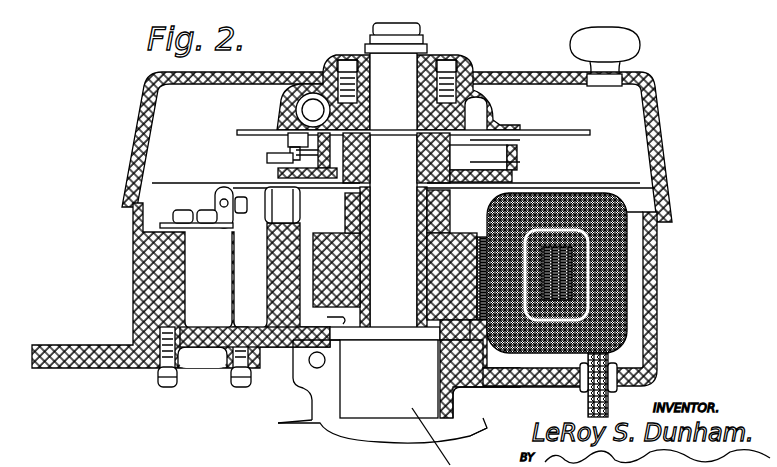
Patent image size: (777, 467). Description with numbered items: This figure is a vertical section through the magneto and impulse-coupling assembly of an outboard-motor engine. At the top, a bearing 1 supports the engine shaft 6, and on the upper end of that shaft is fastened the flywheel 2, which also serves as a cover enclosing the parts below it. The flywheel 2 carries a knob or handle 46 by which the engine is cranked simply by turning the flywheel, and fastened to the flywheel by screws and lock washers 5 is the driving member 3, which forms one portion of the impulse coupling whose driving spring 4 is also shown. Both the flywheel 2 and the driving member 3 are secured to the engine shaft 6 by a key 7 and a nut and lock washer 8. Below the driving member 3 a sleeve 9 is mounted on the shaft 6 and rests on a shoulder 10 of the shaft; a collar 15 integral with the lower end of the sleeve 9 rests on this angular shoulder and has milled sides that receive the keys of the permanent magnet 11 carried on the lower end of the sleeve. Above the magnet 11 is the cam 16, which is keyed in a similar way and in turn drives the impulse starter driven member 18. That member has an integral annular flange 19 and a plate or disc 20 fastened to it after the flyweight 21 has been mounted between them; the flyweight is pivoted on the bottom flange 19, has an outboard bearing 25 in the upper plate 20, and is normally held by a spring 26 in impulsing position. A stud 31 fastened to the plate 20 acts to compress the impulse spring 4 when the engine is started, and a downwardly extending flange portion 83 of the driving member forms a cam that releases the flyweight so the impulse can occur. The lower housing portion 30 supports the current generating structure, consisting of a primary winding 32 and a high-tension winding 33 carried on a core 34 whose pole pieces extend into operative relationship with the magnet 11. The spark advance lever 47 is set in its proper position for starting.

The bearing 1 is at (125, 232).
The flywheel 2 is at (512, 74).
The driving member 3 is at (442, 63).
The driving spring 4 is at (297, 110).
The screws and lock washers 5 is at (462, 62).
The engine shaft 6 is at (385, 80).
The key 7 is at (380, 103).
The nut and lock washer 8 is at (419, 31).
The sleeve 9 is at (417, 227).
The shoulder 10 is at (403, 327).
The permanent magnet 11 is at (335, 240).
The collar 15 is at (338, 322).
The cam 16 is at (443, 218).
The impulse starter driven member 18 is at (446, 158).
The annular flange 19 is at (512, 175).
The plate or disc 20 is at (470, 141).
The flyweight 21 is at (268, 157).
The outboard bearings 25 is at (290, 140).
The springs 26 is at (268, 150).
The lower housing portion 30 is at (150, 268).
The stud 31 is at (476, 115).
The primary winding 32 is at (627, 275).
The high-tension winding 33 is at (627, 312).
The core 34 is at (627, 255).
The knob or handle 46 is at (622, 47).
The spark advance lever 47 is at (98, 362).
The flange portion 83 is at (517, 163).